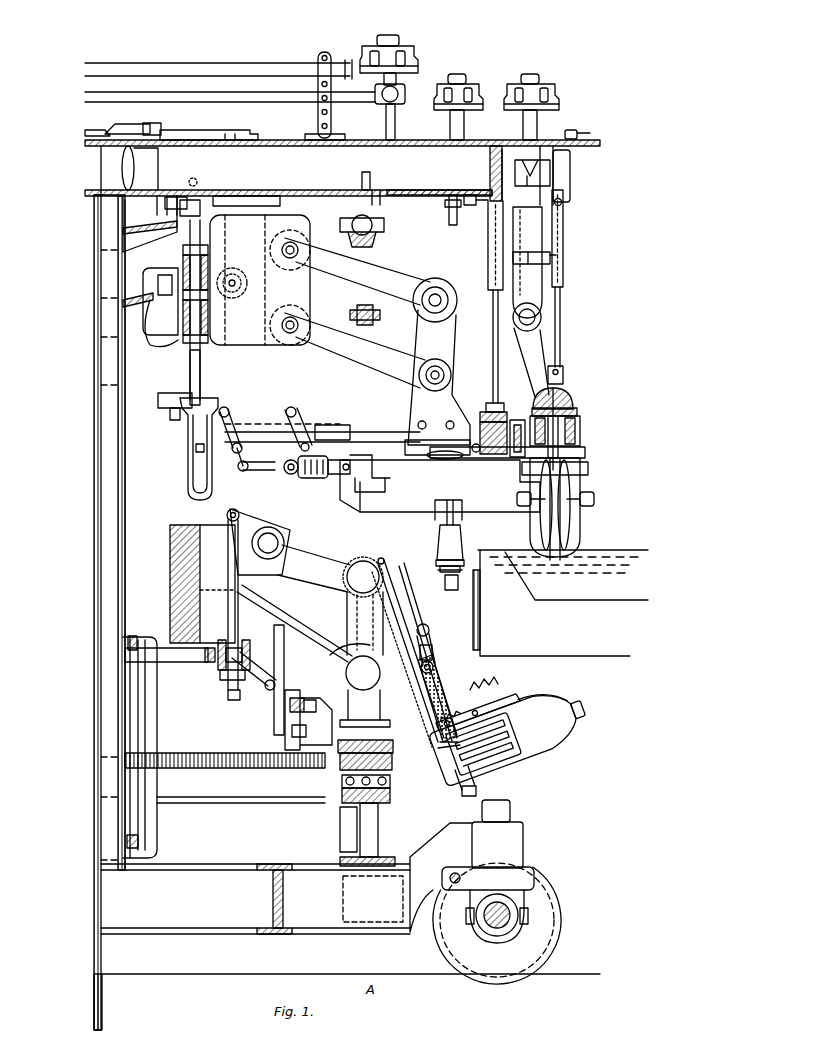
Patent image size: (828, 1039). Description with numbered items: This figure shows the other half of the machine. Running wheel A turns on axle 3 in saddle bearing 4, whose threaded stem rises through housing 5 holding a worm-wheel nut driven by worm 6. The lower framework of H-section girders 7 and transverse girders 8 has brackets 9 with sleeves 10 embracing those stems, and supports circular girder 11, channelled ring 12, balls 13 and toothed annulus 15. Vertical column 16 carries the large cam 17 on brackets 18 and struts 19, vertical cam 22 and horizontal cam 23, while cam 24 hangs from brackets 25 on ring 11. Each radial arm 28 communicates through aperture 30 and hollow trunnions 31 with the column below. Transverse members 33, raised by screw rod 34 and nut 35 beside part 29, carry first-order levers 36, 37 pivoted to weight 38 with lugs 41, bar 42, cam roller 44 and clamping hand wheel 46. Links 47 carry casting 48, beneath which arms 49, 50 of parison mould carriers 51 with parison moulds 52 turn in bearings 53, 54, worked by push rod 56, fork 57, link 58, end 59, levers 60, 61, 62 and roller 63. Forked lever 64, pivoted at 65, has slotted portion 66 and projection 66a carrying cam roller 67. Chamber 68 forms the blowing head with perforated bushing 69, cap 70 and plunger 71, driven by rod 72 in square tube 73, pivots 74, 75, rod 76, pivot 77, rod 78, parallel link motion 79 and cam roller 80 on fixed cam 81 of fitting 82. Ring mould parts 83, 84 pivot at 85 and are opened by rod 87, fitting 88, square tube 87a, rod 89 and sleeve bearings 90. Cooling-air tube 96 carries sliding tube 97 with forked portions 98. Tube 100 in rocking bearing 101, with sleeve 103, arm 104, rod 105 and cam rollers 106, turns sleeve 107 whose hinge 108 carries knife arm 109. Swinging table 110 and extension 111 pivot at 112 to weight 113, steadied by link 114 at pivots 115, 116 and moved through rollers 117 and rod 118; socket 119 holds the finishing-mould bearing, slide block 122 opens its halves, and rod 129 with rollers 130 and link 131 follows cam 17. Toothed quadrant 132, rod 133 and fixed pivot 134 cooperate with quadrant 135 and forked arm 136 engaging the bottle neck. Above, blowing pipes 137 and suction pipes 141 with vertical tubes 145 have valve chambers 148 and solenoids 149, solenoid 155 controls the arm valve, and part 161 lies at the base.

The axles 3 is at (512, 925).
The saddle bearings 4 is at (520, 905).
The housing or casing 5 is at (537, 875).
The screw 6 is at (450, 872).
The longitudinal H-section girders 7 is at (184, 925).
The transverse girders 8 is at (286, 910).
The brackets or extensions 9 is at (441, 872).
The sleeves 10 is at (518, 843).
The circular girder 11 is at (380, 824).
The channelled ring 12 is at (394, 800).
The balls 13 is at (387, 808).
The internally toothed annulus 15 is at (392, 765).
The vertical column 16 is at (124, 488).
The large cam 17 is at (214, 664).
The brackets 18 is at (170, 666).
The vertical struts 19 is at (165, 723).
The vertical cam 22 is at (152, 280).
The horizontal cam 23 is at (181, 230).
The cam 24 is at (306, 700).
The brackets 25 is at (310, 777).
The radial arm 28 is at (288, 186).
The rod 29 is at (378, 185).
The aperture 30 is at (546, 184).
The trunnions 31 is at (352, 562).
The transverse members 33 is at (381, 318).
The screw threaded rod 34 is at (360, 177).
The nut 35 is at (382, 236).
The lever of the first order 36 is at (396, 285).
The lever of the first order 37 is at (396, 355).
The weight 38 is at (290, 287).
The projecting lugs 41 is at (206, 354).
The bar 42 is at (260, 280).
The cam roller 44 is at (176, 333).
The hand wheel 46 is at (237, 278).
The links 47 is at (446, 337).
The casting 48 is at (304, 410).
The arm 49 is at (406, 451).
The arm 50 is at (411, 491).
The parison mould carriers 51 is at (522, 498).
The parison moulds 52 is at (534, 525).
The bearing 53 is at (360, 492).
The bearing 54 is at (360, 481).
The spring buffered push rod 56 is at (313, 483).
The fork 57 is at (290, 479).
The pivoted link 58 is at (262, 476).
The end of lever 59 is at (240, 470).
The link or lever 60 is at (232, 412).
The link or lever 61 is at (306, 446).
The lever 62 is at (263, 428).
The roller 63 is at (190, 449).
The depending lever 64 is at (201, 376).
The pivot 65 is at (192, 178).
The lower portion 66 is at (196, 470).
The projection 66a is at (178, 415).
The cam roller 67 is at (162, 401).
The chamber 68 is at (578, 430).
The bushing or sleeve 69 is at (573, 445).
The cap 70 is at (571, 395).
The plunger 71 is at (576, 406).
The rod 72 is at (566, 328).
The square tube 73 is at (566, 263).
The pivot 74 is at (560, 372).
The pivot 75 is at (567, 205).
The rod 76 is at (566, 168).
The pivot 77 is at (576, 134).
The rod 78 is at (482, 138).
The parallel link motion 79 is at (216, 127).
The cam roller 80 is at (170, 118).
The lever 81 is at (116, 128).
The non-rotatable fitting 82 is at (96, 132).
The ring mould part 83 is at (496, 441).
The ring mould part 84 is at (494, 456).
The pivot 85 is at (511, 456).
The rod 87 is at (496, 350).
The squared tube 87a is at (562, 238).
The fitting 88 is at (500, 396).
The rod 89 is at (490, 176).
The sleeve bearings 90 is at (494, 163).
The tube 96 is at (566, 221).
The tube 97 is at (572, 292).
The forked portions 98 is at (543, 345).
The tube 100 is at (449, 521).
The bearing 101 is at (440, 470).
The sleeve 103 is at (450, 206).
The arm 104 is at (470, 203).
The rod 105 is at (410, 184).
The cam rollers 106 is at (118, 184).
The sleeve 107 is at (460, 528).
The hinge 108 is at (438, 556).
The arm 109 is at (447, 573).
The casting 110 is at (513, 750).
The extension 111 is at (298, 576).
The pivot 112 is at (276, 530).
The weight 113 is at (185, 549).
The link 114 is at (274, 640).
The pivot 115 is at (322, 705).
The pivot 116 is at (305, 612).
The rollers 117 is at (286, 720).
The rod 118 is at (276, 703).
The socket 119 is at (427, 790).
The slide block 122 is at (436, 655).
The vertical rod 129 is at (190, 596).
The rollers 130 is at (226, 682).
The link 131 is at (256, 681).
The toothed quadrant 132 is at (456, 686).
The rod 133 is at (410, 612).
The fixed pivotal point 134 is at (382, 560).
The toothed quadrant 135 is at (490, 690).
The forked arm 136 is at (542, 703).
The radiating pipes 137 is at (232, 60).
The radiating pipes 141 is at (299, 86).
The vertical tubes 145 is at (395, 128).
The valve chambers 148 is at (396, 95).
The solenoids 149 is at (408, 48).
The solenoid 155 is at (553, 94).
The post 161 is at (92, 1003).
The wheel A is at (552, 904).